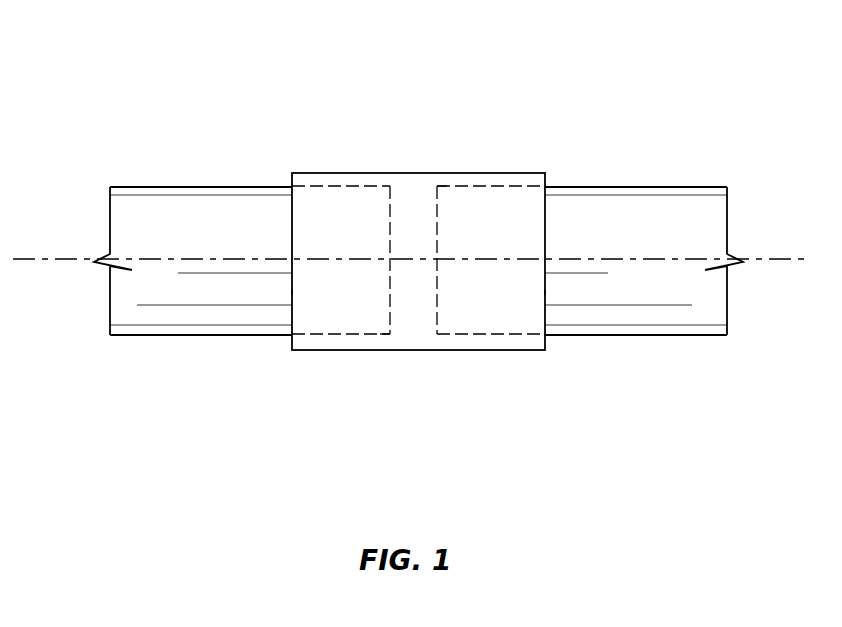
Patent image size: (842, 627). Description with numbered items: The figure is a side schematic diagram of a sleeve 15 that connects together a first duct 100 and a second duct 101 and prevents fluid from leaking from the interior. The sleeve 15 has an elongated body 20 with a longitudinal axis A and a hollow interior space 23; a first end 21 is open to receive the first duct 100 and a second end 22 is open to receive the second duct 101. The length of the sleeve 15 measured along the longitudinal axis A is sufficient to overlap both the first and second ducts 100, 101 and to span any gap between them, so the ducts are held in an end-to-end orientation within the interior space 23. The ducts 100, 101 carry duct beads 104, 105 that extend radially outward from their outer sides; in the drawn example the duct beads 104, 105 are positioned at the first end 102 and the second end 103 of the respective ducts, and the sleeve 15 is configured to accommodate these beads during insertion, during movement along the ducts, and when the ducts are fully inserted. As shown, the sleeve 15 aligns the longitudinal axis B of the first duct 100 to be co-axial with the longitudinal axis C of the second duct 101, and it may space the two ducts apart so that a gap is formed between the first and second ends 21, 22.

The sleeve 15 is at (317, 110).
The first duct 100 is at (157, 212).
The second duct 101 is at (675, 212).
The first end of the first duct 102 is at (390, 213).
The second end of the second duct 103 is at (437, 232).
The duct bead 104 is at (388, 337).
The duct bead 105 is at (445, 187).
The elongated body 20 is at (313, 350).
The first end 21 is at (292, 292).
The second end 22 is at (545, 293).
The interior space 23 is at (408, 330).
The longitudinal axis A is at (328, 258).
The longitudinal axis of the first duct B is at (201, 258).
The longitudinal axis of the second duct C is at (623, 257).